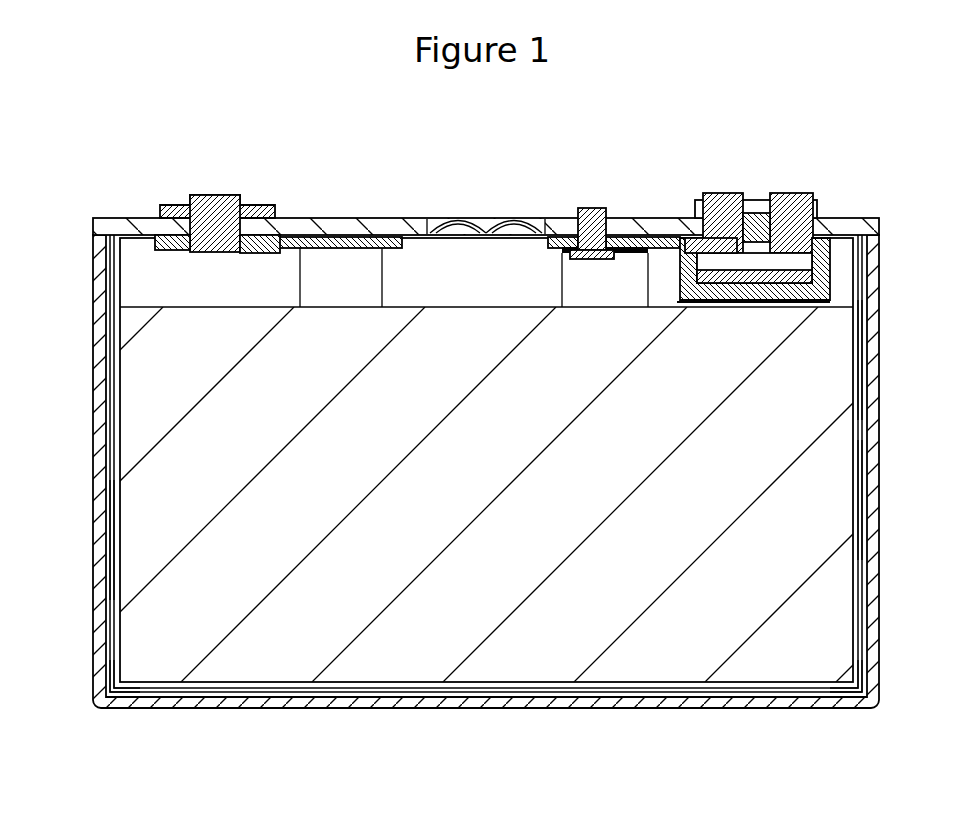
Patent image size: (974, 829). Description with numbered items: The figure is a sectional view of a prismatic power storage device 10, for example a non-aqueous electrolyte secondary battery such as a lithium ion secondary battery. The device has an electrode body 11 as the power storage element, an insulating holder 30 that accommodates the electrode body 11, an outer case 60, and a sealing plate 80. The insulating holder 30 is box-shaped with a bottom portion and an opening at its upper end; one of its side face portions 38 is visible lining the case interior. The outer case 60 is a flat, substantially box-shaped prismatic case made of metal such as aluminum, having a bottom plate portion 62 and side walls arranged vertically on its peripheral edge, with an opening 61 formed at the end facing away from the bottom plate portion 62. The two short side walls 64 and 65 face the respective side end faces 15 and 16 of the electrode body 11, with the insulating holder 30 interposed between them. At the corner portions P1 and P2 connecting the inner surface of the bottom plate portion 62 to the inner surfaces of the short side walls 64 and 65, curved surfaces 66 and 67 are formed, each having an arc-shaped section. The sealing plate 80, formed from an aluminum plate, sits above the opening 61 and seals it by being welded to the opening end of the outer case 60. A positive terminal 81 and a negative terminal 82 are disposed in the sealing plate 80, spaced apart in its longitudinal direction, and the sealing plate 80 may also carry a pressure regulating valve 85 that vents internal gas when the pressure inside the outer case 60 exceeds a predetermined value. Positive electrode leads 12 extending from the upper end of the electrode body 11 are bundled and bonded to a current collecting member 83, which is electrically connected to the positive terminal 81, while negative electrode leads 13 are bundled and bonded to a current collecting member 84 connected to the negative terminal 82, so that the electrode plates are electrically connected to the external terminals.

The prismatic power storage device 10 is at (828, 160).
The electrode body 11 is at (836, 439).
The positive electrode lead 12 is at (621, 268).
The negative electrode lead 13 is at (325, 268).
The side end face 15 is at (863, 546).
The side end face 16 is at (118, 543).
The insulating holder 30 is at (859, 262).
The side face portion 38 is at (863, 381).
The outer case 60 is at (882, 297).
The opening 61 is at (106, 218).
The bottom plate portion 62 is at (500, 709).
The short side wall 64 is at (866, 483).
The short side wall 65 is at (105, 490).
The curved surface 66 is at (856, 672).
The curved surface 67 is at (120, 673).
The sealing plate 80 is at (376, 216).
The positive terminal 81 is at (790, 197).
The negative terminal 82 is at (214, 196).
The current collecting member 83 is at (676, 246).
The current collecting member 84 is at (172, 251).
The pressure regulating valve 85 is at (462, 228).
The corner portion P1 is at (848, 680).
The corner portion P2 is at (126, 680).